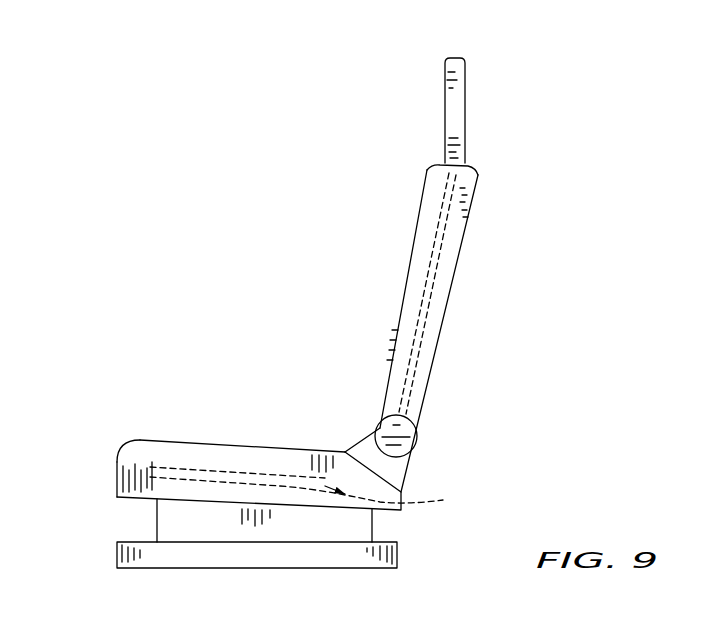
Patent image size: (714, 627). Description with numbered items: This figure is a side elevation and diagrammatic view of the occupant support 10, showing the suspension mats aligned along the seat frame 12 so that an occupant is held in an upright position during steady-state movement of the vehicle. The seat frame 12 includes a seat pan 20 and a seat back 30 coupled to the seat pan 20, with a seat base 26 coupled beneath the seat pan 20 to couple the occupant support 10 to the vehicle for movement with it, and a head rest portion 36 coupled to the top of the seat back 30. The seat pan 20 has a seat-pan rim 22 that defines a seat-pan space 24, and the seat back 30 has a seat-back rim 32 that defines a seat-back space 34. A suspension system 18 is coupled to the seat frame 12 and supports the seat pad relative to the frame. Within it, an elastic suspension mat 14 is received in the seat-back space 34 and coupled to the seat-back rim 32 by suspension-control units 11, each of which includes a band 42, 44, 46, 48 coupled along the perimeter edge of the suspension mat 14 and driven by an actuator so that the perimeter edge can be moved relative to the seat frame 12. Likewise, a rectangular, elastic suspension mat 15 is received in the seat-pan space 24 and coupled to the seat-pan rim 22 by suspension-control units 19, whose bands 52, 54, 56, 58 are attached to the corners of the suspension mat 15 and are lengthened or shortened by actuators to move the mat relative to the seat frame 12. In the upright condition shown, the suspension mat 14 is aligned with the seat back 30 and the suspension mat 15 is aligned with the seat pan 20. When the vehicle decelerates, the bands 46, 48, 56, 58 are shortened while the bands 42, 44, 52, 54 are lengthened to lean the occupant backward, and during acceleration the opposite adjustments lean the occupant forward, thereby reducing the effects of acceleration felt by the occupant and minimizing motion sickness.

The occupant support 10 is at (167, 124).
The suspension-control units 11 is at (444, 194).
The seat frame 12 is at (479, 148).
The suspension mat 14 is at (420, 280).
The suspension mat 15 is at (193, 466).
The suspension system 18 is at (449, 228).
The suspension-control units 19 is at (312, 495).
The seat pan 20 is at (227, 441).
The seat-pan rim 22 is at (150, 472).
The seat-pan space 24 is at (236, 468).
The seat base 26 is at (113, 558).
The seat back 30 is at (458, 268).
The seat-back rim 32 is at (466, 190).
The seat-back space 34 is at (442, 272).
The head rest portion 36 is at (458, 55).
The band 42 is at (441, 174).
The band 44 is at (437, 184).
The band 46 is at (396, 403).
The band 48 is at (385, 410).
The band 52 is at (318, 475).
The band 54 is at (330, 475).
The band 56 is at (116, 455).
The band 58 is at (152, 466).